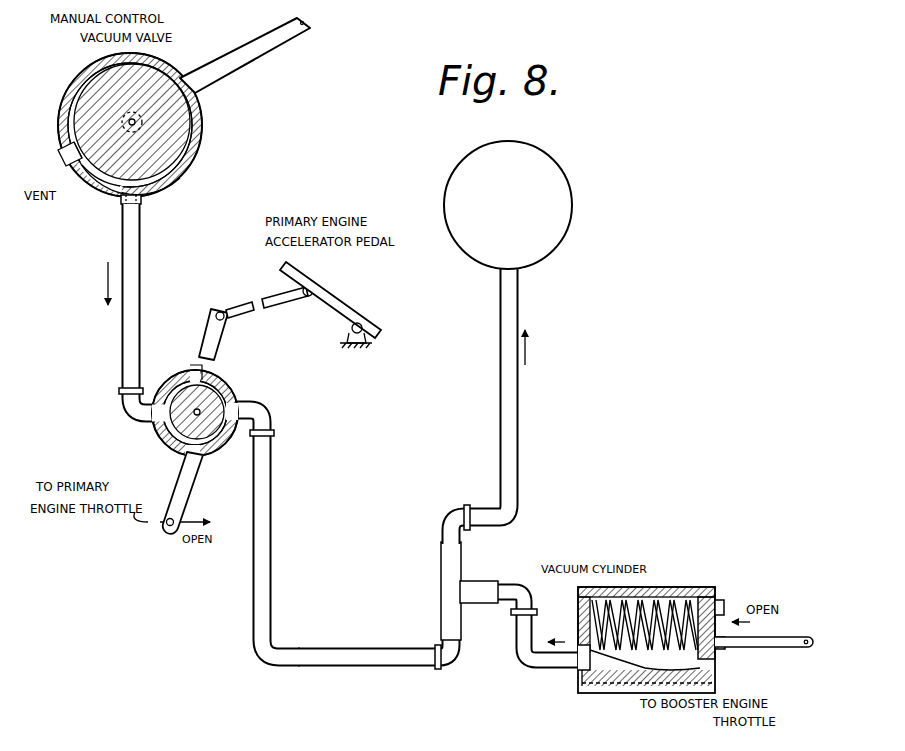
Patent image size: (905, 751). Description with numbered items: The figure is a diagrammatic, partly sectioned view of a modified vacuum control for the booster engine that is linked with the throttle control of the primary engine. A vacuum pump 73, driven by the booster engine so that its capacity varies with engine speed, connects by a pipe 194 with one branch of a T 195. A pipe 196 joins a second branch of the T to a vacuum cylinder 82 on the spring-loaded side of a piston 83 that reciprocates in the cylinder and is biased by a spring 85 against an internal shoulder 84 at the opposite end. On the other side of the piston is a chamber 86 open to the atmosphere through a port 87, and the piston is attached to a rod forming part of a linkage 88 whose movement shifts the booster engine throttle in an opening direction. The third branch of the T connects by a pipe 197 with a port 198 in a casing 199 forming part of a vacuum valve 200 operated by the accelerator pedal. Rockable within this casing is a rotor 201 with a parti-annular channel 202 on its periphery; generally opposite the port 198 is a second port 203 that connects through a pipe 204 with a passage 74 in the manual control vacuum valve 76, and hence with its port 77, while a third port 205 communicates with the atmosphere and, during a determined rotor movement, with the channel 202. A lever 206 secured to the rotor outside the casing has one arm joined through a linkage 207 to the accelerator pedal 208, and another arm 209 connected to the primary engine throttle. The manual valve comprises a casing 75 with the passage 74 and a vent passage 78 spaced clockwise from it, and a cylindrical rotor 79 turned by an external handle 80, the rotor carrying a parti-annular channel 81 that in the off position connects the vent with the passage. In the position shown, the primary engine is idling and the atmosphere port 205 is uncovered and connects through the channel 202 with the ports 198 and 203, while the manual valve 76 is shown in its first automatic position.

The vacuum pump 73 is at (556, 238).
The passage 74 is at (148, 195).
The casing 75 is at (196, 155).
The manual control vacuum valve 76 is at (205, 113).
The port 77 is at (185, 170).
The vent passage 78 is at (60, 151).
The cylindrical rotor 79 is at (178, 135).
The external handle 80 is at (280, 40).
The parti-annular channel 81 is at (92, 182).
The vacuum cylinder 82 is at (580, 686).
The piston 83 is at (700, 600).
The internal shoulder 84 is at (700, 657).
The spring 85 is at (578, 606).
The chamber 86 is at (712, 606).
The port 87 is at (726, 606).
The linkage 88 is at (778, 649).
The pipe 194 is at (516, 409).
The T 195 is at (440, 552).
The pipe 196 is at (516, 662).
The pipe 197 is at (386, 668).
The port 198 is at (250, 395).
The casing 199 is at (226, 384).
The vacuum valve 200 is at (222, 460).
The rotor 201 is at (152, 422).
The parti-annular channel 202 is at (162, 442).
The second port 203 is at (172, 380).
The pipe 204 is at (124, 336).
The third port 205 is at (194, 370).
The lever 206 is at (222, 340).
The linkage 207 is at (238, 300).
The accelerator pedal 208 is at (340, 298).
The arm 209 is at (166, 528).